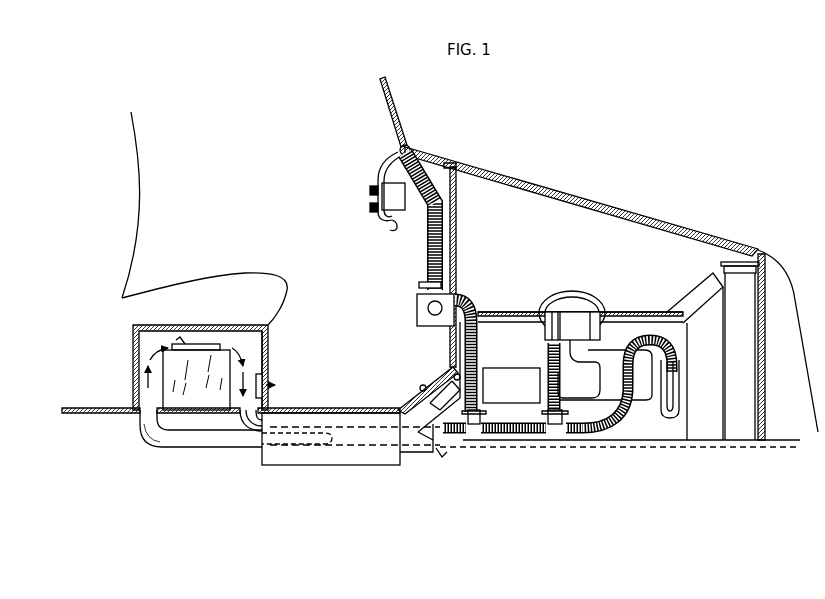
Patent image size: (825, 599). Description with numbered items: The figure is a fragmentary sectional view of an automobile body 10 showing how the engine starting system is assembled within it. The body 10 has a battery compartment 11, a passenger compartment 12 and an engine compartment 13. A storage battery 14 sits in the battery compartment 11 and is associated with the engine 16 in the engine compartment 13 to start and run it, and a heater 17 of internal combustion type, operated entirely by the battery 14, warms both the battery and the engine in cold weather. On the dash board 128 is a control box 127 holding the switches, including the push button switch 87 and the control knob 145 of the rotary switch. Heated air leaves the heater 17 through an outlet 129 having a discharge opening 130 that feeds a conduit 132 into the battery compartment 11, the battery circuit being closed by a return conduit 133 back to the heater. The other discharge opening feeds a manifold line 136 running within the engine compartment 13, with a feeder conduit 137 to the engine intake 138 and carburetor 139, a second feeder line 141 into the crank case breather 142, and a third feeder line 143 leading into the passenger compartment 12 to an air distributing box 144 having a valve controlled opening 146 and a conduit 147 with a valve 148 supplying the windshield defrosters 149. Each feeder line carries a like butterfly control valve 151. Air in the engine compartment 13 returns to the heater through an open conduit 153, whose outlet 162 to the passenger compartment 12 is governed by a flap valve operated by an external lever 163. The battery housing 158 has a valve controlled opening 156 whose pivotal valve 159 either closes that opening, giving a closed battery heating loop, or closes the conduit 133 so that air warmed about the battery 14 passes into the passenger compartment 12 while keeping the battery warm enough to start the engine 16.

The body 10 is at (414, 143).
The battery compartment 11 is at (146, 366).
The passenger compartment 12 is at (204, 218).
The engine compartment 13 is at (620, 345).
The battery 14 is at (192, 402).
The engine 16 is at (678, 330).
The heater 17 is at (362, 457).
The switch 87 is at (370, 207).
The control box 127 is at (385, 220).
The dash board 128 is at (389, 215).
The outlet 129 is at (422, 455).
The discharge opening 130 is at (440, 452).
The conduit 132 is at (237, 438).
The conduit 133 is at (302, 447).
The manifold line 136 is at (512, 443).
The feeder conduit 137 is at (548, 363).
The engine intake 138 is at (612, 312).
The carburetor 139 is at (586, 355).
The second feeder line 141 is at (622, 428).
The breather 142 is at (672, 418).
The third feeder line 143 is at (478, 348).
The air distributing box 144 is at (414, 311).
The control knob 145 is at (370, 190).
The valve controlled opening 146 is at (430, 325).
The conduit 147 is at (430, 253).
The valve 148 is at (419, 287).
The windshield defrosters 149 is at (392, 150).
The control valve 151 is at (480, 413).
The open conduit 153 is at (412, 410).
The valve controlled opening 156 is at (258, 380).
The battery housing 158 is at (268, 353).
The valve 159 is at (265, 397).
The outlet 162 is at (429, 286).
The lever 163 is at (511, 385).